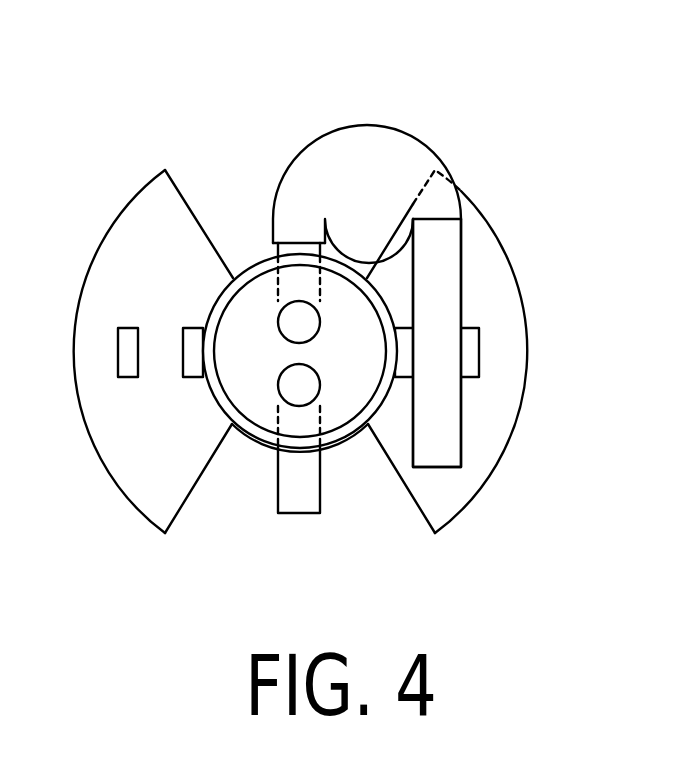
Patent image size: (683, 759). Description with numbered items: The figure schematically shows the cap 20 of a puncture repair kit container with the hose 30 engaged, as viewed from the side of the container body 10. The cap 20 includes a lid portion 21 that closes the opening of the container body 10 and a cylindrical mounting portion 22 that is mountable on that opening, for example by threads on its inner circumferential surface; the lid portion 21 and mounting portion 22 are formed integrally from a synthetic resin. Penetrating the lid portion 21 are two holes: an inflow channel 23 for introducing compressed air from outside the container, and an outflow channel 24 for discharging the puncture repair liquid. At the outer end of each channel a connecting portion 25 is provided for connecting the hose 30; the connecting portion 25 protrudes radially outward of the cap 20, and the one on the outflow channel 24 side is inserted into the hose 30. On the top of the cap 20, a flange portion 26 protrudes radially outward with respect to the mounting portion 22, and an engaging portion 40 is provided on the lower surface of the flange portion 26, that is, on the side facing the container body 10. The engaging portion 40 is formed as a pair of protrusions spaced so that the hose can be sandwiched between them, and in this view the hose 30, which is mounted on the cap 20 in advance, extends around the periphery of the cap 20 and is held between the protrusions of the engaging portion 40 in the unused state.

The container body 10 is at (402, 160).
The cap 20 is at (136, 153).
The lid portion 21 is at (245, 310).
The mounting portion 22 is at (260, 435).
The inflow channel 23 is at (307, 387).
The outflow channel 24 is at (292, 320).
The connecting portion 25 is at (288, 500).
The flange portion 26 is at (488, 438).
The hose 30 is at (447, 213).
The engaging portion 40 is at (473, 353).